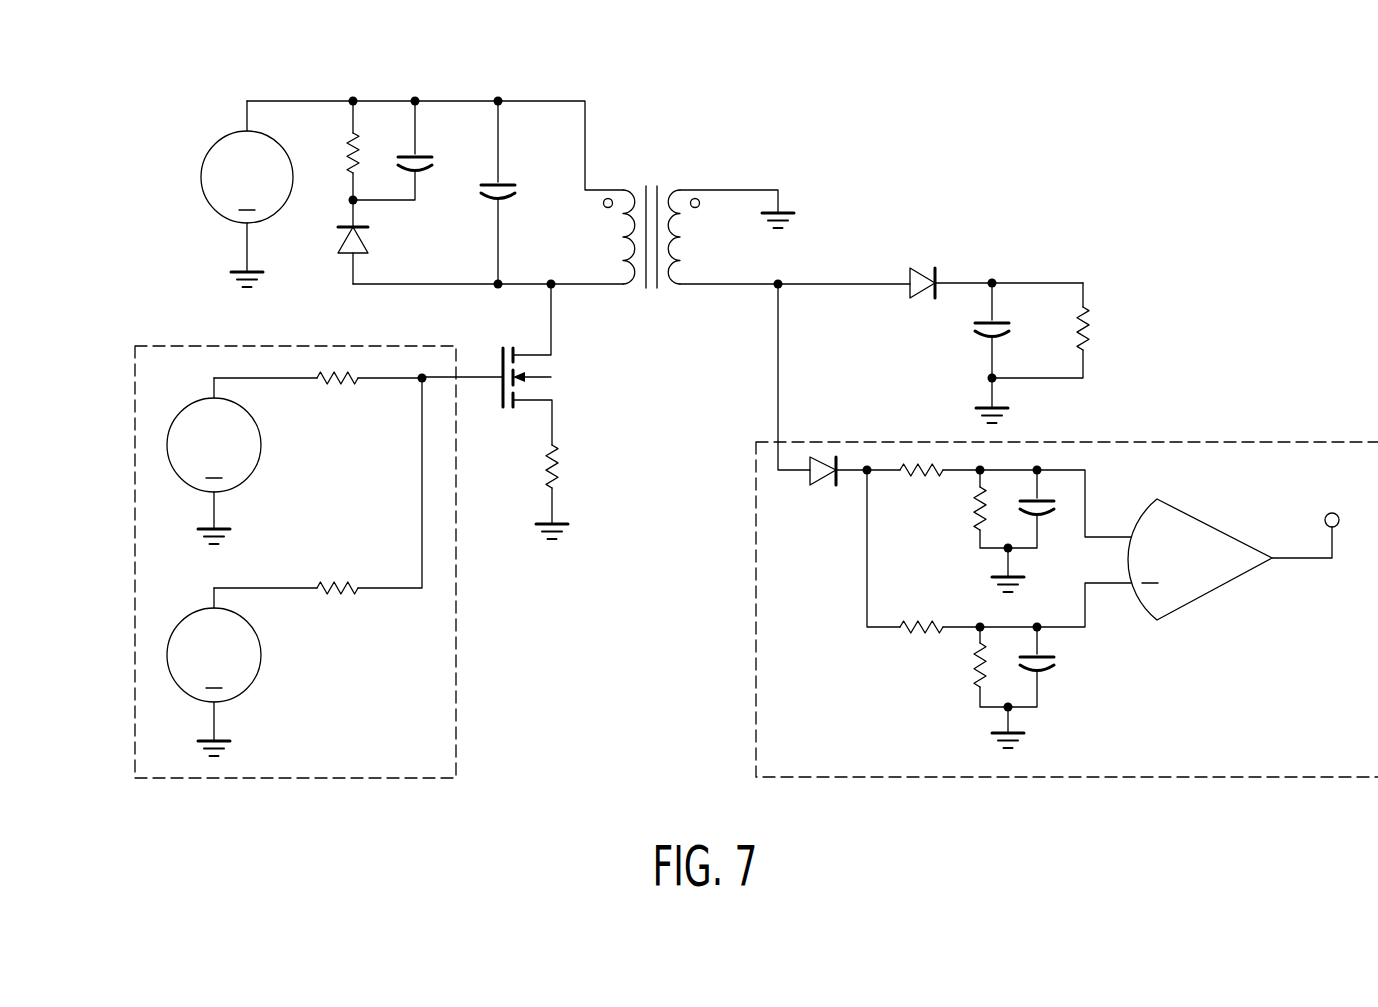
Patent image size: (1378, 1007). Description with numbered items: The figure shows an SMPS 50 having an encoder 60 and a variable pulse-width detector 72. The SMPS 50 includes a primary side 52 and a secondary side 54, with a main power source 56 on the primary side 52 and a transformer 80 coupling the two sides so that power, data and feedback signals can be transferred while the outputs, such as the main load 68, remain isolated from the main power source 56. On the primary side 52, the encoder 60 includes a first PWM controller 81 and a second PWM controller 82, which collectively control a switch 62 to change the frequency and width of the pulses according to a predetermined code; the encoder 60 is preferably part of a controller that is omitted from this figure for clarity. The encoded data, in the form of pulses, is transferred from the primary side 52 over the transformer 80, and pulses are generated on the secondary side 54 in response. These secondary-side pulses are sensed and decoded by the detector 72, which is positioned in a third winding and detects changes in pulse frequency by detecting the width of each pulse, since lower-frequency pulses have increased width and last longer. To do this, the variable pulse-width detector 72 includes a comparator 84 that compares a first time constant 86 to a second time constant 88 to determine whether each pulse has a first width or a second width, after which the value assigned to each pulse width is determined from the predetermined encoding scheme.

The SMPS 50 is at (1057, 155).
The primary side 52 is at (465, 86).
The secondary side 54 is at (868, 258).
The main power source 56 is at (213, 148).
The encoder 60 is at (460, 690).
The switch 62 is at (528, 404).
The main load 68 is at (1102, 330).
The variable pulse-width detector 72 is at (755, 680).
The transformer 80 is at (653, 178).
The first PWM controller 81 is at (248, 456).
The second PWM controller 82 is at (248, 666).
The comparator 84 is at (1215, 590).
The first time constant 86 is at (1110, 533).
The second time constant 88 is at (1105, 587).